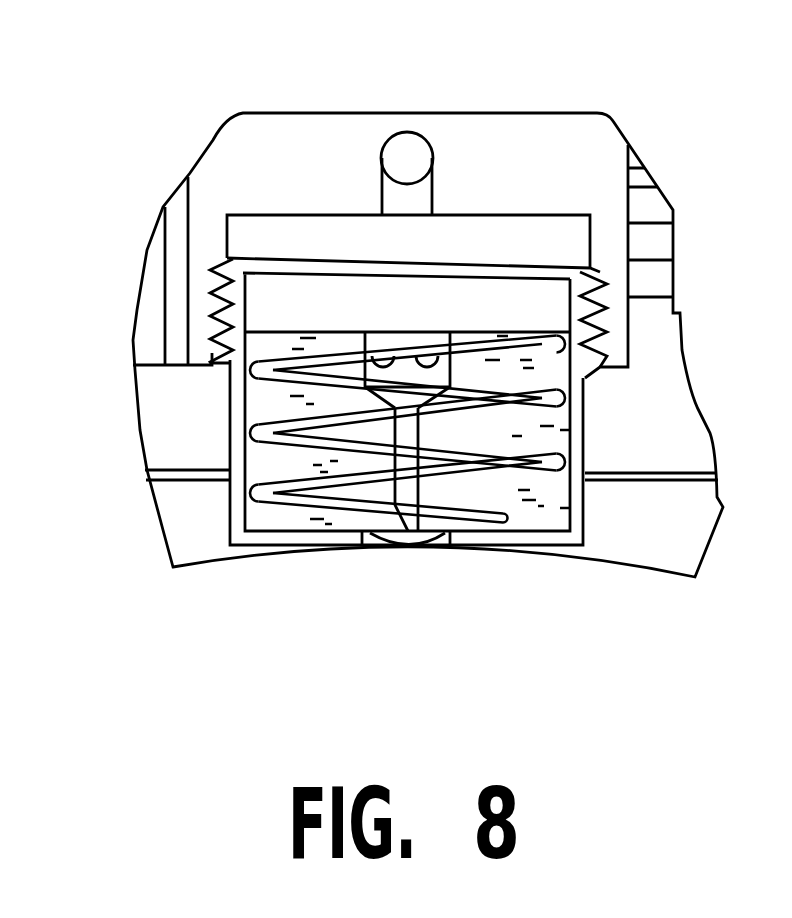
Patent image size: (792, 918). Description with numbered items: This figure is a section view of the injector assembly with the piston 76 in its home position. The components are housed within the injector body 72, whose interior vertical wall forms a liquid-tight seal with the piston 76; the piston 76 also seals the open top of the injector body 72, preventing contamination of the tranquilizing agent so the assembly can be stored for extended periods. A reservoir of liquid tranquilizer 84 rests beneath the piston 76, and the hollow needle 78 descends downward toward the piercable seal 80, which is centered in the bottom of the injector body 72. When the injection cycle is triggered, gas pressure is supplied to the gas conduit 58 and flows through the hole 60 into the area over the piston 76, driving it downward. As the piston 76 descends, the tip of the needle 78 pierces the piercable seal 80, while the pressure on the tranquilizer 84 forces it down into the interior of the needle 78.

The gas conduit 58 is at (403, 130).
The hole 60 is at (428, 210).
The injector body 72 is at (230, 413).
The piston 76 is at (283, 315).
The needle 78 is at (423, 507).
The piercable seal 80 is at (388, 548).
The tranquilizer 84 is at (277, 458).